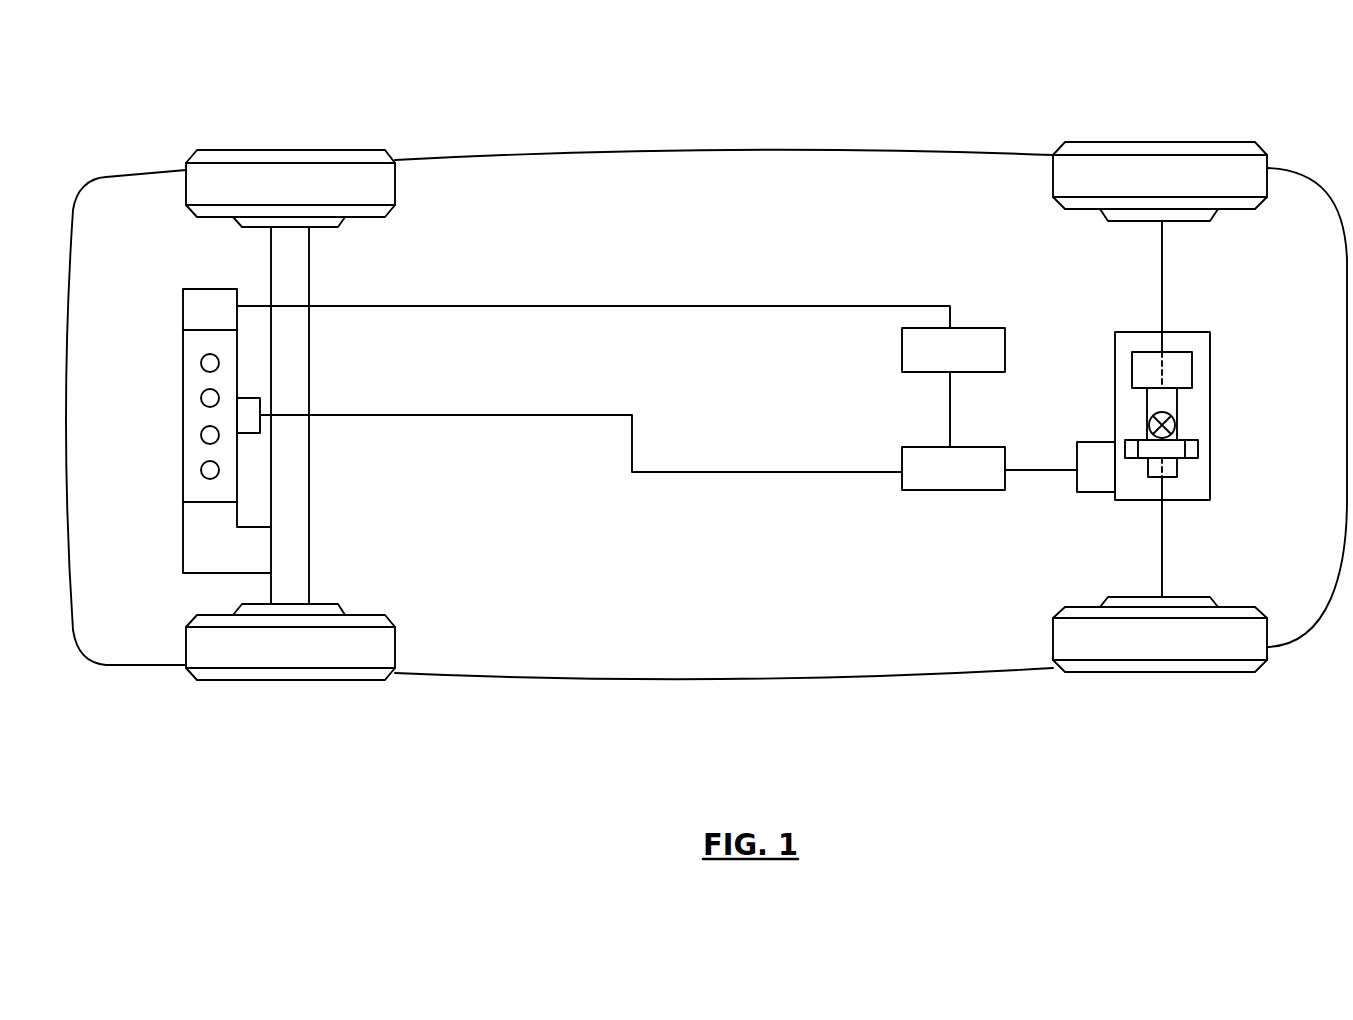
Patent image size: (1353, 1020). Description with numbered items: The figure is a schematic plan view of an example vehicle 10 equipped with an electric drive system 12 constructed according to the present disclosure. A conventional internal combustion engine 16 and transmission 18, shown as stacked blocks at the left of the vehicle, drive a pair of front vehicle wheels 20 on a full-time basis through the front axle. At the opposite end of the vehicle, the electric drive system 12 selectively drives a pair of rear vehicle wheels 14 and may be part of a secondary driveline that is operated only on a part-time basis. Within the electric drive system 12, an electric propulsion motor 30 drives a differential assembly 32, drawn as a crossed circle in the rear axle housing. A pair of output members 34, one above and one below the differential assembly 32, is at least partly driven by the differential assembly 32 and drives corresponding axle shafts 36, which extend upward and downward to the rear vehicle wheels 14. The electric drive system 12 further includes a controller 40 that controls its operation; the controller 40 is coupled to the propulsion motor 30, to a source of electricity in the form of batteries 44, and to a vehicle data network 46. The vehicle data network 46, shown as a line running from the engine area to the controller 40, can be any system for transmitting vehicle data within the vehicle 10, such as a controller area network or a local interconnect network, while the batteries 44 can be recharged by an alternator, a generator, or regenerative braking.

The vehicle 10 is at (672, 96).
The electric drive system 12 is at (1225, 375).
The rear vehicle wheels 14 is at (1165, 142).
The internal combustion engine 16 is at (185, 374).
The transmission 18 is at (186, 545).
The front vehicle wheels 20 is at (296, 150).
The electric propulsion motor 30 is at (1093, 484).
The differential assembly 32 is at (1177, 425).
The output members 34 is at (1182, 365).
The axle shafts 36 is at (1162, 240).
The controller 40 is at (952, 490).
The batteries 44 is at (988, 328).
The vehicle data network 46 is at (660, 473).